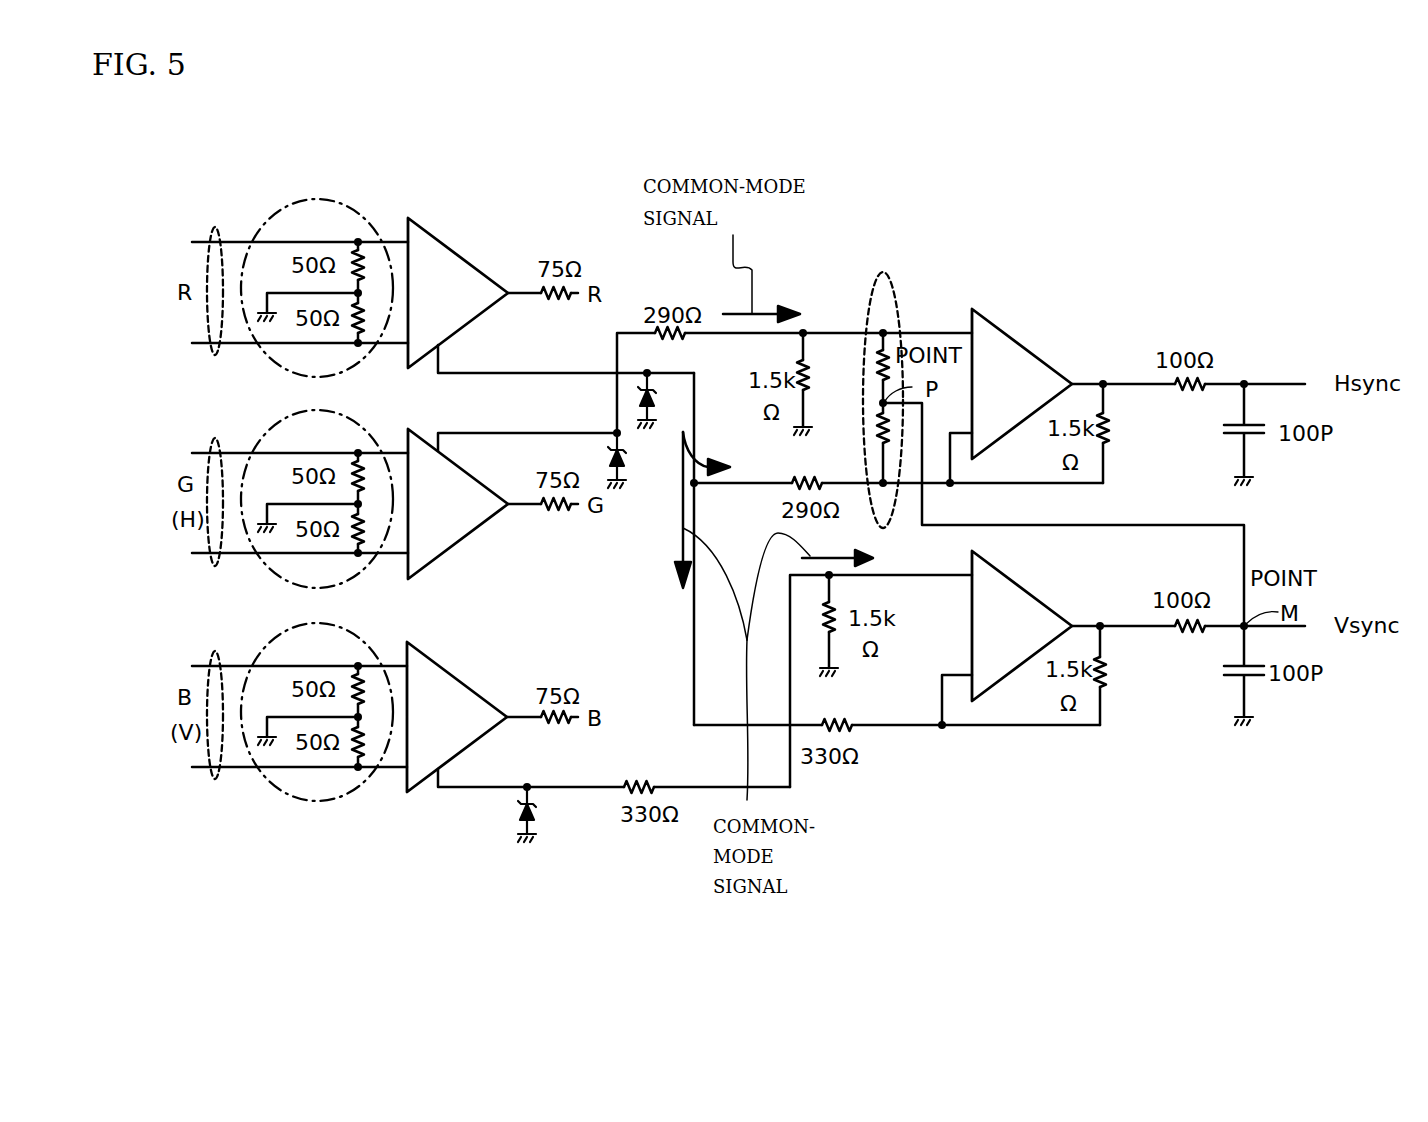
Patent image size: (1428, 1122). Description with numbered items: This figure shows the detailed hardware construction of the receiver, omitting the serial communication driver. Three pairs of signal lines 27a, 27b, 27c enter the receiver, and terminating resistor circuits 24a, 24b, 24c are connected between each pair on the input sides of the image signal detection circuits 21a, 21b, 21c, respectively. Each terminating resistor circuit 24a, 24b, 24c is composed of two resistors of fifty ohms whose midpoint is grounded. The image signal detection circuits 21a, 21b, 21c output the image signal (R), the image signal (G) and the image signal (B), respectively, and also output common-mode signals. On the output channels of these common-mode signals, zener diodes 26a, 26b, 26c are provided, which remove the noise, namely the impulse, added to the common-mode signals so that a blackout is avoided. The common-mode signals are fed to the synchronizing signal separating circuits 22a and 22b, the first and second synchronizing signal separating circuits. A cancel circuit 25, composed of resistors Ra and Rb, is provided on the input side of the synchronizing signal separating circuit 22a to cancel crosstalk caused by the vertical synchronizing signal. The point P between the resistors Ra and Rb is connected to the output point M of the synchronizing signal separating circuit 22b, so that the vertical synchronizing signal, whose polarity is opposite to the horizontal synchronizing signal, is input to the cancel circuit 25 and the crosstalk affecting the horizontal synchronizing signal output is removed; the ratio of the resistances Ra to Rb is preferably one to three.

The image signal detection circuit 21a is at (465, 257).
The image signal detection circuit 21b is at (463, 542).
The image signal detection circuit 21c is at (460, 668).
The synchronizing signal separating circuit 22a is at (1030, 348).
The synchronizing signal separating circuit 22b is at (1040, 597).
The terminating resistor circuit 24a is at (280, 210).
The terminating resistor circuit 24b is at (280, 421).
The terminating resistor circuit 24c is at (265, 647).
The cancel circuit 25 is at (883, 273).
The zener diode 26a is at (652, 390).
The zener diode 26b is at (612, 442).
The zener diode 26c is at (535, 807).
The pair of signal lines 27a is at (213, 228).
The pair of signal lines 27b is at (213, 439).
The pair of signal lines 27c is at (215, 652).